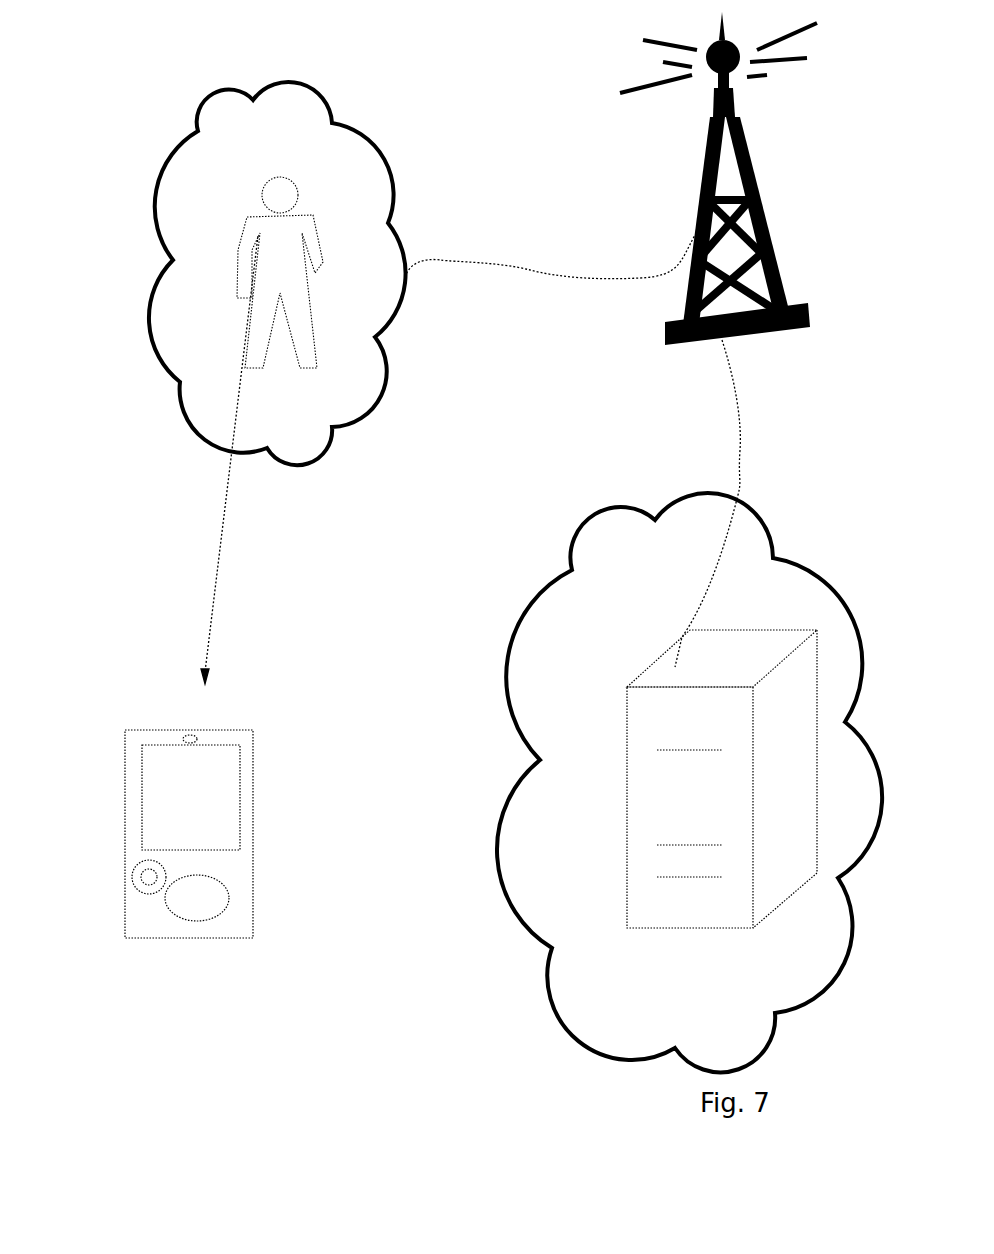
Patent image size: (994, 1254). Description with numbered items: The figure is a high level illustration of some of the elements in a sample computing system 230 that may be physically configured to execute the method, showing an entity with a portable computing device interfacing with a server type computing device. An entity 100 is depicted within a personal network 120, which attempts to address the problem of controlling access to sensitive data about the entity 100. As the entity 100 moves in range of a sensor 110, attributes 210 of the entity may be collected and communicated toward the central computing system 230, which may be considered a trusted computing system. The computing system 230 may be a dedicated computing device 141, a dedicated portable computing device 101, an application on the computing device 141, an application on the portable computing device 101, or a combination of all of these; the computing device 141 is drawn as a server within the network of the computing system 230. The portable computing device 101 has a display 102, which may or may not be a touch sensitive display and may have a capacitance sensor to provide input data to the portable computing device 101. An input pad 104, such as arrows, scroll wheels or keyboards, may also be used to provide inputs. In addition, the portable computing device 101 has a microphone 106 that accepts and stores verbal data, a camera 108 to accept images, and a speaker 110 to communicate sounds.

The personal network 120 is at (195, 115).
The entity 100 is at (250, 248).
The sensor 110 is at (710, 133).
The attributes 210 is at (246, 460).
The portable computing device 101 is at (260, 795).
The camera 108 is at (203, 732).
The display 102 is at (240, 843).
The input pad 104 is at (212, 913).
The microphone 106 is at (203, 938).
The computing device 141 is at (693, 667).
The central computing system 230 is at (595, 1003).